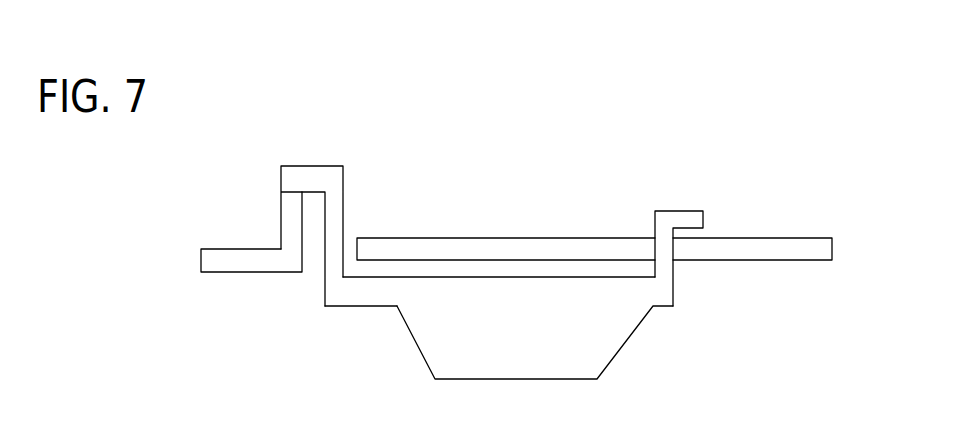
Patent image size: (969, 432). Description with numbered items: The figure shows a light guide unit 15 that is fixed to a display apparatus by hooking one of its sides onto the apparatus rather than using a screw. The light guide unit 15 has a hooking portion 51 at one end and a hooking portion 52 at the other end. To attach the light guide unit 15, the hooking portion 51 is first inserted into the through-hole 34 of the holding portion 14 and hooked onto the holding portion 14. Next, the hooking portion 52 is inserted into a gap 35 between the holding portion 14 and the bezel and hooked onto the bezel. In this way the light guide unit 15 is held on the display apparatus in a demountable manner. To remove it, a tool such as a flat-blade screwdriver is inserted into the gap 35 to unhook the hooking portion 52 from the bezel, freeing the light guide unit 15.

The holding portion 14 is at (790, 238).
The light guide unit 15 is at (623, 343).
The through-hole 34 is at (655, 248).
The gap 35 is at (310, 273).
The hooking portion 51 is at (688, 209).
The hooking portion 52 is at (338, 178).